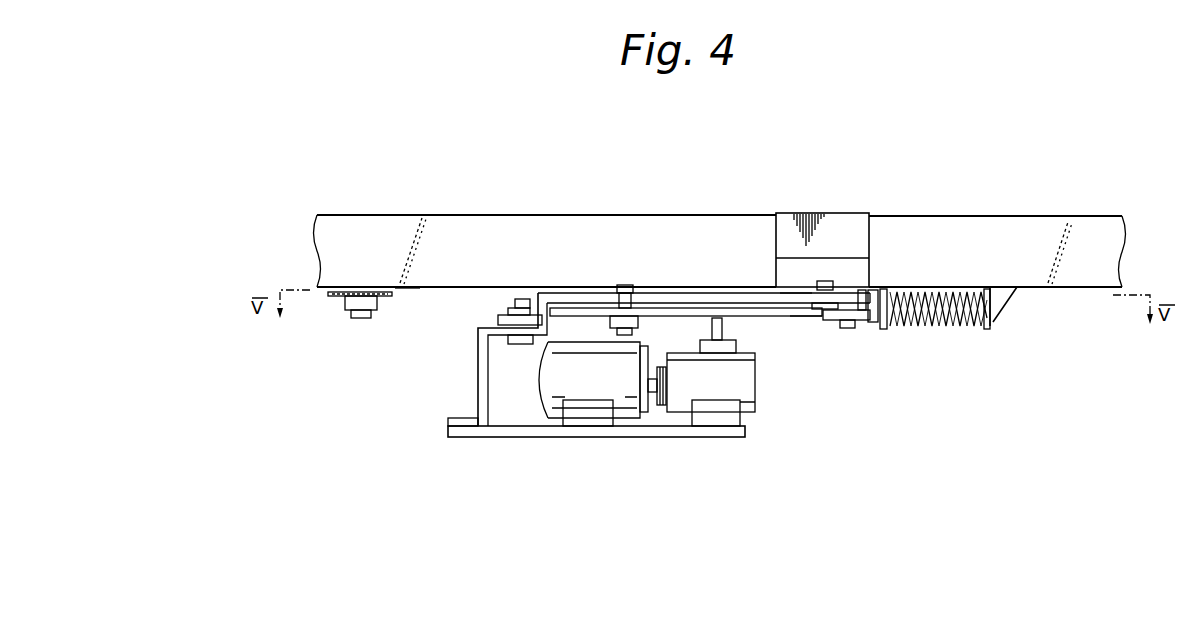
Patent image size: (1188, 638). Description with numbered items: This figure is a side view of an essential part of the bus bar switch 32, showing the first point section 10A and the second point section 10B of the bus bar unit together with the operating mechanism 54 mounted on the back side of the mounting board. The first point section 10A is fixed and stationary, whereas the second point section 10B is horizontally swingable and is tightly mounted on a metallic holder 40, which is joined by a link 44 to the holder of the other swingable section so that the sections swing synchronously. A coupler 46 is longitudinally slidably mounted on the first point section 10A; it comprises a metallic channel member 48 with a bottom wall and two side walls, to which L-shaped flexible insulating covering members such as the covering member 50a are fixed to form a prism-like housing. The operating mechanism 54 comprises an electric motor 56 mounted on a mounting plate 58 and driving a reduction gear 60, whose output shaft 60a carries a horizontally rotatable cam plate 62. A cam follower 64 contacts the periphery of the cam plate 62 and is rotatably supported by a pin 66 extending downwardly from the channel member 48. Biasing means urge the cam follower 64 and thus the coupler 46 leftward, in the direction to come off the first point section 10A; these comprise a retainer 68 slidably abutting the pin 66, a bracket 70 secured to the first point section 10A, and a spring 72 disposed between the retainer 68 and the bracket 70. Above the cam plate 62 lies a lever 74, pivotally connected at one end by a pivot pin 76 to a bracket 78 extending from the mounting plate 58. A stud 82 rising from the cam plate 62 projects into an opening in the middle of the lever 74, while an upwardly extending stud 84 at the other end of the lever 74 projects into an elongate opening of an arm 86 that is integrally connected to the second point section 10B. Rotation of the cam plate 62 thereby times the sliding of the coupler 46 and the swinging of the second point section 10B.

The first point section 10A is at (1017, 215).
The second point section 10B is at (478, 212).
The switch 32 is at (921, 131).
The metallic holder 40 is at (408, 290).
The link 44 is at (333, 296).
The coupler 46 is at (861, 212).
The metallic channel member 48 is at (863, 296).
The covering member 50a is at (812, 214).
The operating mechanism 54 is at (858, 415).
The electric motor 56 is at (627, 408).
The mounting plate 58 is at (545, 437).
The reduction gear 60 is at (752, 413).
The output shaft 60a is at (723, 330).
The cam plate 62 is at (800, 320).
The cam follower 64 is at (868, 325).
The pin 66 is at (850, 328).
The retainer 68 is at (880, 291).
The bracket 70 is at (1003, 318).
The spring 72 is at (962, 328).
The lever 74 is at (567, 292).
The pivot pin 76 is at (517, 303).
The bracket 78 is at (478, 378).
The stud 82 is at (628, 293).
The stud 84 is at (812, 291).
The arm 86 is at (890, 293).